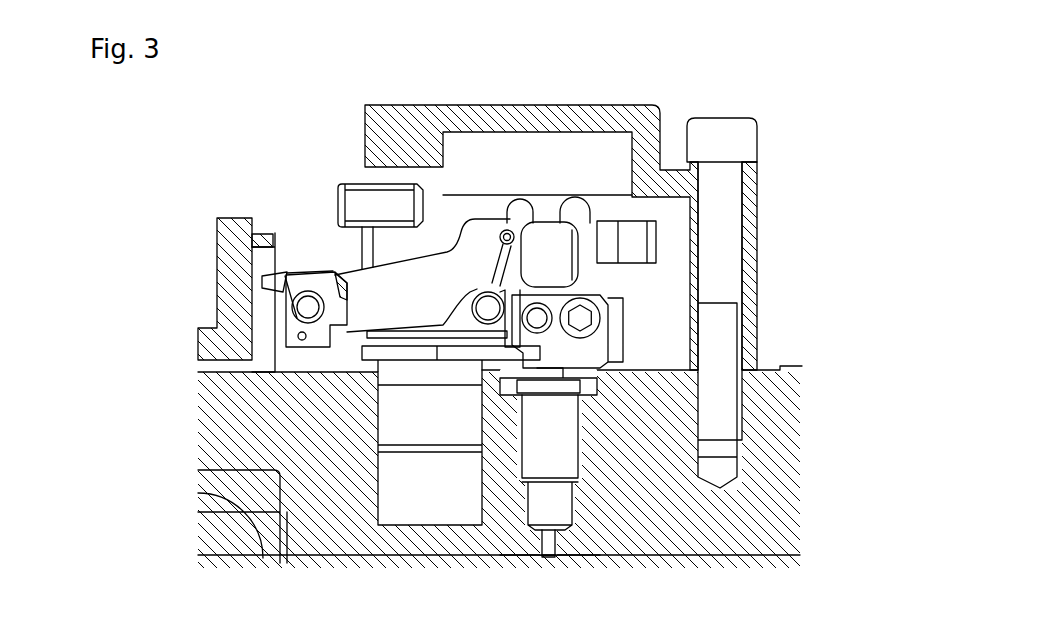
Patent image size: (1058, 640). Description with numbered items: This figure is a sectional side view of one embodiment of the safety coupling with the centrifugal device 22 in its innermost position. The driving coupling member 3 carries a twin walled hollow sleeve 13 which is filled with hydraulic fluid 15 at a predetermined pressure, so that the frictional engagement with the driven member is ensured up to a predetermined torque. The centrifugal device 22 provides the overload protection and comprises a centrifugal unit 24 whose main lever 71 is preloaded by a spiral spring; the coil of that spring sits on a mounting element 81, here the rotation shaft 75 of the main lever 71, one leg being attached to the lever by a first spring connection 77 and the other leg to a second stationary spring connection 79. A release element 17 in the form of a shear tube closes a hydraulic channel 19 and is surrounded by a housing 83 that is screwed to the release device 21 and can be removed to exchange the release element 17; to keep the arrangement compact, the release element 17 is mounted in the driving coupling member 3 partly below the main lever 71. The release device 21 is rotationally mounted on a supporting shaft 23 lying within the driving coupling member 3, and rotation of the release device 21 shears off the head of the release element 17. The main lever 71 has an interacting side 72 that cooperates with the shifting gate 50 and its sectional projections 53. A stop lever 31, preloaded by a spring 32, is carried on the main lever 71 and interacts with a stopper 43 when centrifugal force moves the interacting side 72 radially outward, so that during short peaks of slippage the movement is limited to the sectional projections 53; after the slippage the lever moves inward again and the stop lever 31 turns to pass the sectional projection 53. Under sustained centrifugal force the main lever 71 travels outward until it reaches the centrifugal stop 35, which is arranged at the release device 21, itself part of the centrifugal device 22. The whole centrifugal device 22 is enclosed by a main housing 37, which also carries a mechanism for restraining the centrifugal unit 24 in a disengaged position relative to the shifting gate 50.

The driving coupling member 3 is at (732, 535).
The twin walled hollow sleeve 13 is at (823, 556).
The hydraulic fluid 15 is at (565, 541).
The release element 17 is at (543, 435).
The hydraulic channel 19 is at (557, 557).
The release device 21 is at (605, 227).
The centrifugal device 22 is at (577, 166).
The supporting shaft 23 is at (412, 507).
The centrifugal unit 24 is at (390, 293).
The stop lever 31 is at (332, 300).
The spring 32 is at (296, 316).
The centrifugal stop 35 is at (354, 207).
The main housing 37 is at (550, 597).
The stopper 43 is at (308, 255).
The shifting gate 50 is at (258, 350).
The sectional projections 53 is at (259, 243).
The main lever 71 is at (413, 293).
The interacting side 72 is at (330, 280).
The rotation shaft 75 is at (556, 257).
The first spring connection 77 is at (506, 233).
The second stationary spring connection 79 is at (494, 318).
The mounting element 81 is at (556, 246).
The housing 83 is at (578, 352).